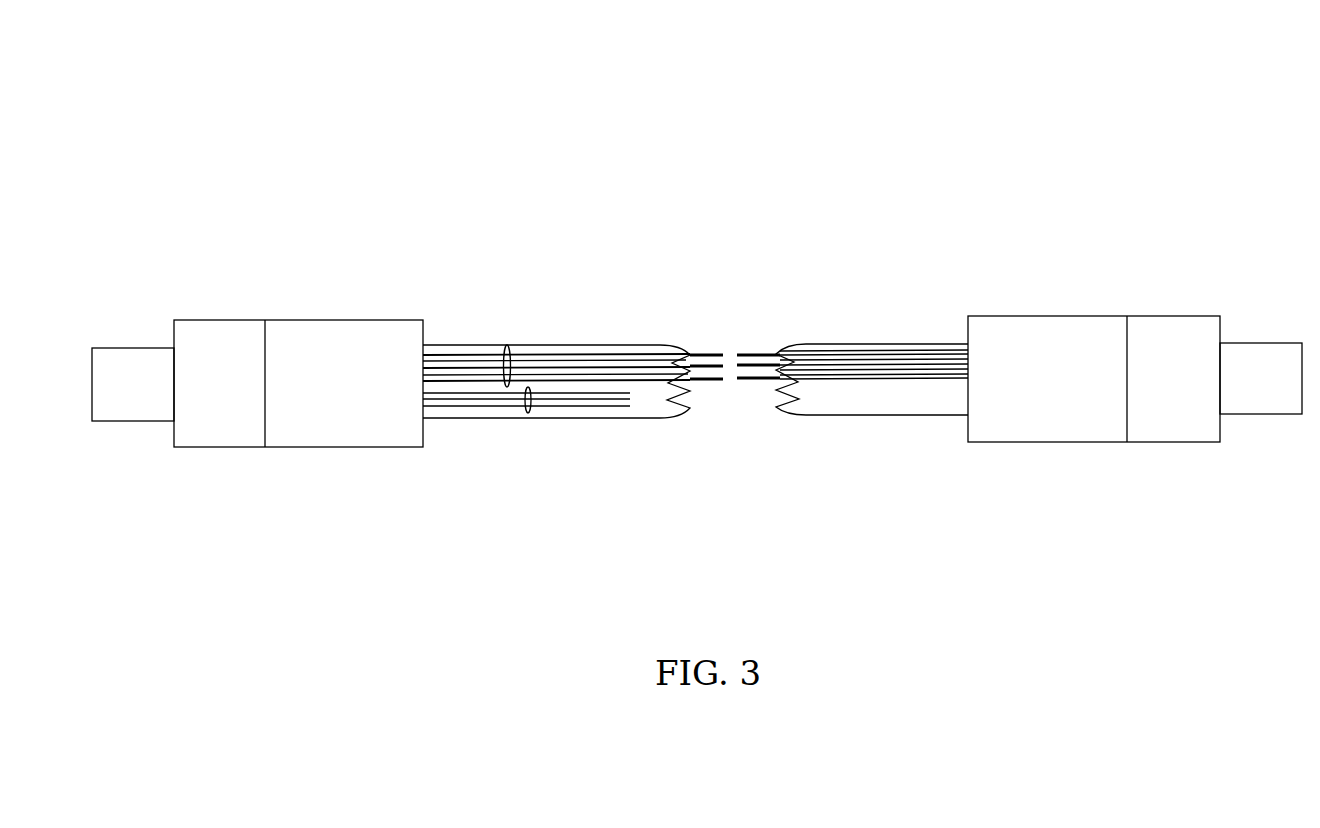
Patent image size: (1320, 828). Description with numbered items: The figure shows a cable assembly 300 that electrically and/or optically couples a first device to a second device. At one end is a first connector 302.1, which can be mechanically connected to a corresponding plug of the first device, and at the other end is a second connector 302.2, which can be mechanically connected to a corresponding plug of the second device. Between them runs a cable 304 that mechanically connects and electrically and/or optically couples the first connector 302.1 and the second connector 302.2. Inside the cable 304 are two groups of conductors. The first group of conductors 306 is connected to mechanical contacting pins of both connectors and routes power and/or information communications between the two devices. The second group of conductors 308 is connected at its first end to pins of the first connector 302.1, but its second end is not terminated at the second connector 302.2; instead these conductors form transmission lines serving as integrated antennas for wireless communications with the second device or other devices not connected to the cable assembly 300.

The cable assembly 300 is at (1183, 121).
The first connector 302.1 is at (265, 320).
The second connector 302.2 is at (1127, 316).
The cable 304 is at (878, 344).
The first group of conductors 306 is at (508, 345).
The second group of conductors 308 is at (528, 413).